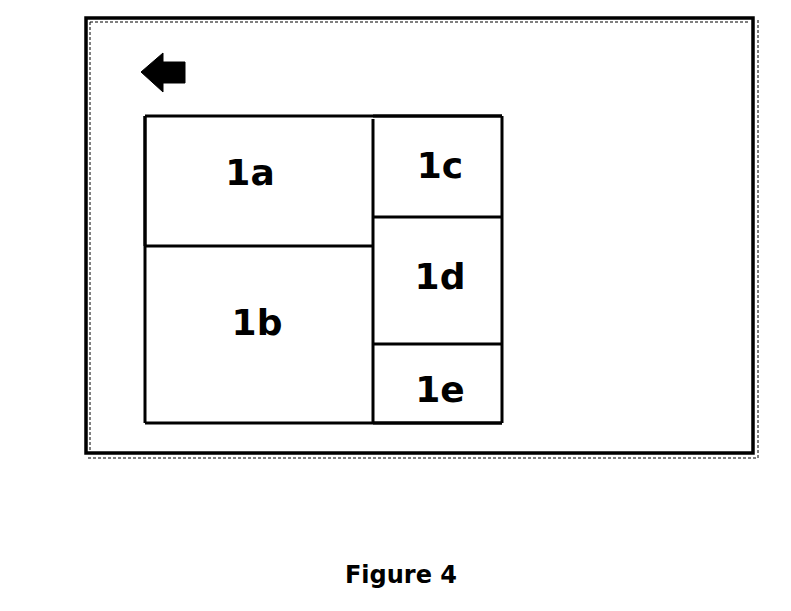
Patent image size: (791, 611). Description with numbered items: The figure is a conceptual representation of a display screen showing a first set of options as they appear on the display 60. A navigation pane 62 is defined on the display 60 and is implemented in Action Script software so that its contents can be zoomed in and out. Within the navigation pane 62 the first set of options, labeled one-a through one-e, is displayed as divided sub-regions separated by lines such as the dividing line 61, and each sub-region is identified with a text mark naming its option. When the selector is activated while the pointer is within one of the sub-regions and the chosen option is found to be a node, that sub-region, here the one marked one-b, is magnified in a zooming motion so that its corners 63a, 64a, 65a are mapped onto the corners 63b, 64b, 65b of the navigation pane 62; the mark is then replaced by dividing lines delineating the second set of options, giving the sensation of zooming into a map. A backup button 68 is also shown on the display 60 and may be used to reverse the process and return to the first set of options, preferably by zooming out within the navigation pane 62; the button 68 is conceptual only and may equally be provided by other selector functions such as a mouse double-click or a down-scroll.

The display 60 is at (86, 56).
The backup button 68 is at (200, 73).
The dividing line 61 is at (372, 163).
The navigation pane 62 is at (525, 188).
The sub-region corner 63a is at (372, 247).
The navigation pane corner 63b is at (504, 116).
The sub-region corner 64a is at (363, 421).
The navigation pane corner 64b is at (505, 422).
The sub-region corner 65a is at (145, 247).
The navigation pane corner 65b is at (145, 116).